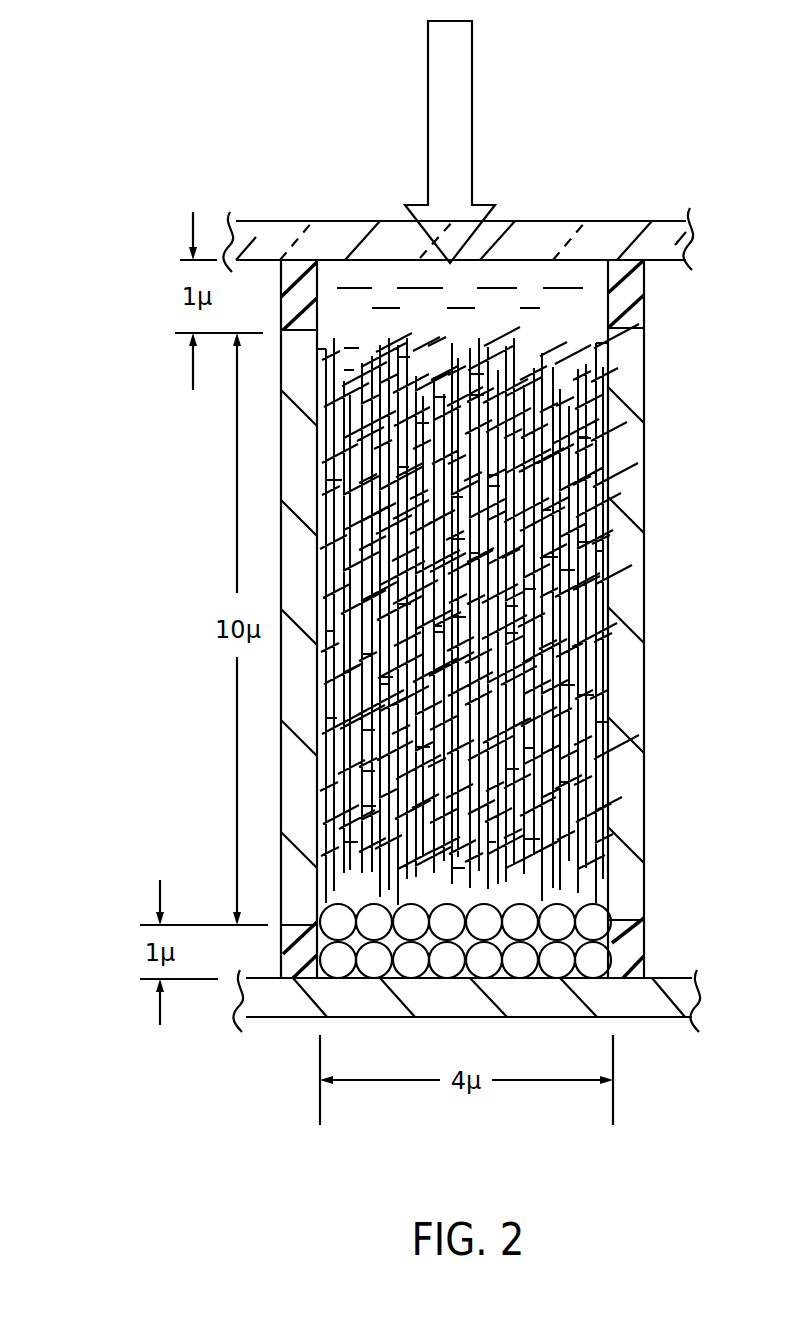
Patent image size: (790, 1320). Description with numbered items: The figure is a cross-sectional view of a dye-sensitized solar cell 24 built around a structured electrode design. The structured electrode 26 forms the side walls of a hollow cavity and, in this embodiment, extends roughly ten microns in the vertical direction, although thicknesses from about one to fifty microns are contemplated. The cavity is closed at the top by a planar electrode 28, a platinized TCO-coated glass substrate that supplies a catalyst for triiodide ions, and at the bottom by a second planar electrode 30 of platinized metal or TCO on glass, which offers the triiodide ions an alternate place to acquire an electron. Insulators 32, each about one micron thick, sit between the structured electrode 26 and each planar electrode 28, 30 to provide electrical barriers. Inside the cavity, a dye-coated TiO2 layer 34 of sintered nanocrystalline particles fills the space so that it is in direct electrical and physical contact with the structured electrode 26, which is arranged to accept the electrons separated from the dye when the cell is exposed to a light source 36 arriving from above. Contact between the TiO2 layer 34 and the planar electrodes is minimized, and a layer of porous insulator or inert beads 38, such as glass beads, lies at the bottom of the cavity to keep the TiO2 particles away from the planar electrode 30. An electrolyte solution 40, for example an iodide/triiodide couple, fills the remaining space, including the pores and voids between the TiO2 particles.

The solar cell 24 is at (165, 82).
The structured electrode 26 is at (292, 415).
The planar electrode 28 is at (663, 230).
The second planar electrode 30 is at (657, 1003).
The insulators 32 is at (285, 303).
The dye-coated TiO2 layer 34 is at (578, 596).
The light source 36 is at (460, 59).
The inert beads 38 is at (335, 968).
The electrolyte solution 40 is at (330, 275).